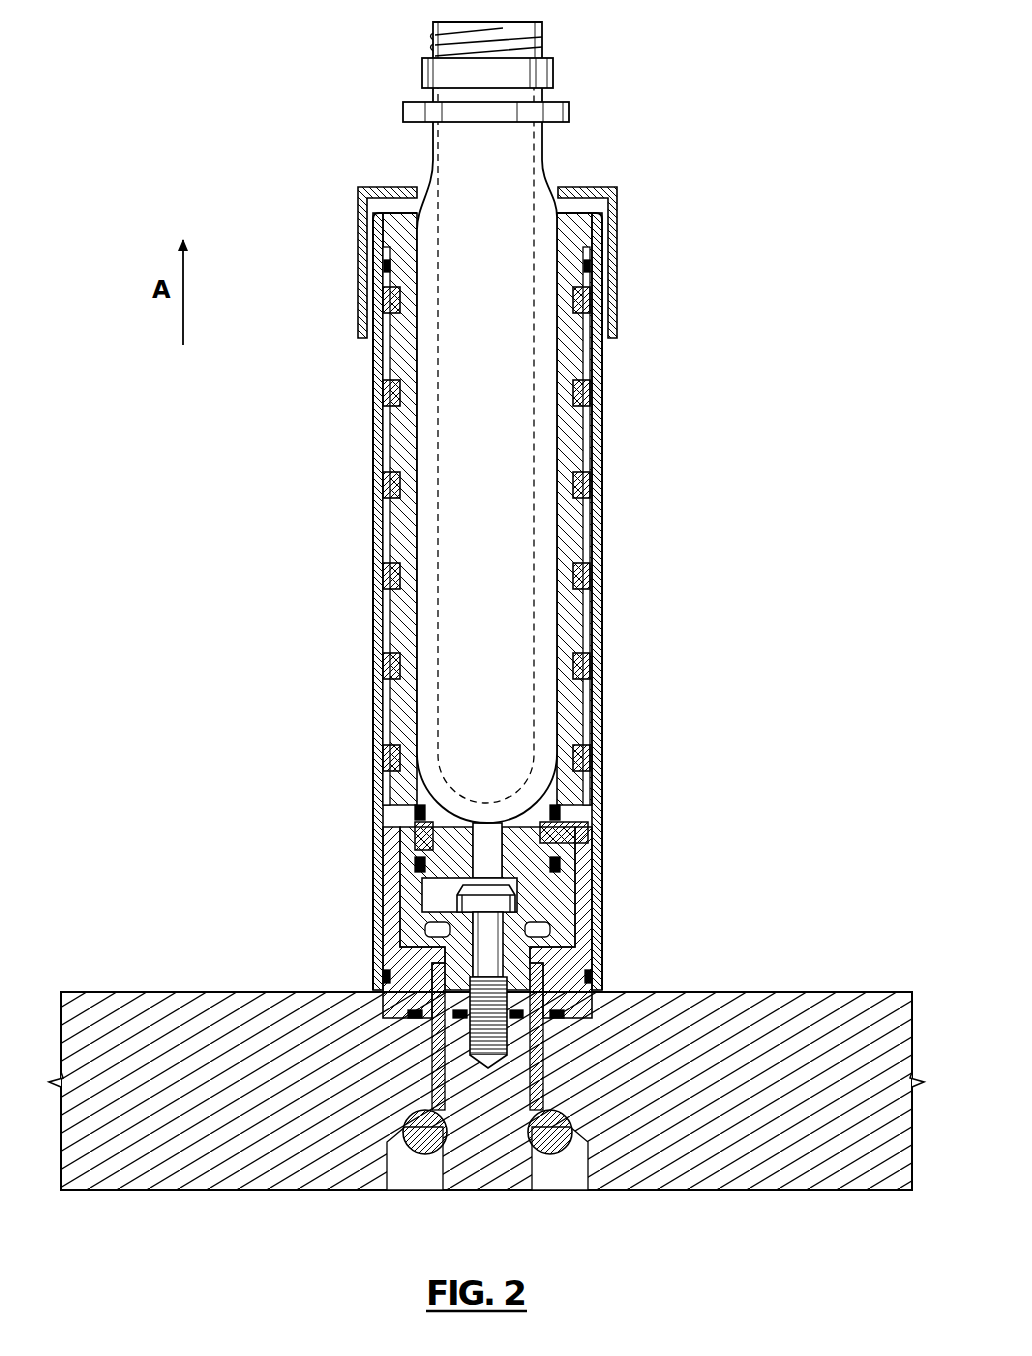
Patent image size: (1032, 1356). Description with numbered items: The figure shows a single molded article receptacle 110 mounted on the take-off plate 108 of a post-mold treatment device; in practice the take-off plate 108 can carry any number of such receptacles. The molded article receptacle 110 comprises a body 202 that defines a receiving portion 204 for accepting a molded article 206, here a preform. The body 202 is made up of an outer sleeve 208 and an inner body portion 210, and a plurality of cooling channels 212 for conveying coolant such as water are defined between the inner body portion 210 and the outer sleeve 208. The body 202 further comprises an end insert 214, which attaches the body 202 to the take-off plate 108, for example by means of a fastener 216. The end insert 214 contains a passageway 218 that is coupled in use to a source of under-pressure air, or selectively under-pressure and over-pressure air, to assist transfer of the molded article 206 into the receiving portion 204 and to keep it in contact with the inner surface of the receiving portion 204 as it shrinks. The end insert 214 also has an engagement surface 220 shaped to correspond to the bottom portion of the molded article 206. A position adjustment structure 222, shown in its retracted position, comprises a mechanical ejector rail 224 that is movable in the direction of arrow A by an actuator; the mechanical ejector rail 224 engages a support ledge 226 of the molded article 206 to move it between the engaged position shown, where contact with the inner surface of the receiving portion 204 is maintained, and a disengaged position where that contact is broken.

The take-off plate 108 is at (800, 1010).
The molded article receptacle 110 is at (688, 499).
The body 202 is at (391, 712).
The receiving portion 204 is at (553, 250).
The molded article 206 is at (455, 168).
The outer sleeve 208 is at (373, 542).
The inner body portion 210 is at (405, 513).
The cooling channels 212 is at (383, 395).
The end insert 214 is at (458, 860).
The fastener 216 is at (487, 962).
The passageway 218 is at (492, 845).
The engagement surface 220 is at (547, 822).
The position adjustment structure 222 is at (620, 275).
The mechanical ejector rail 224 is at (360, 245).
The support ledge 226 is at (570, 115).